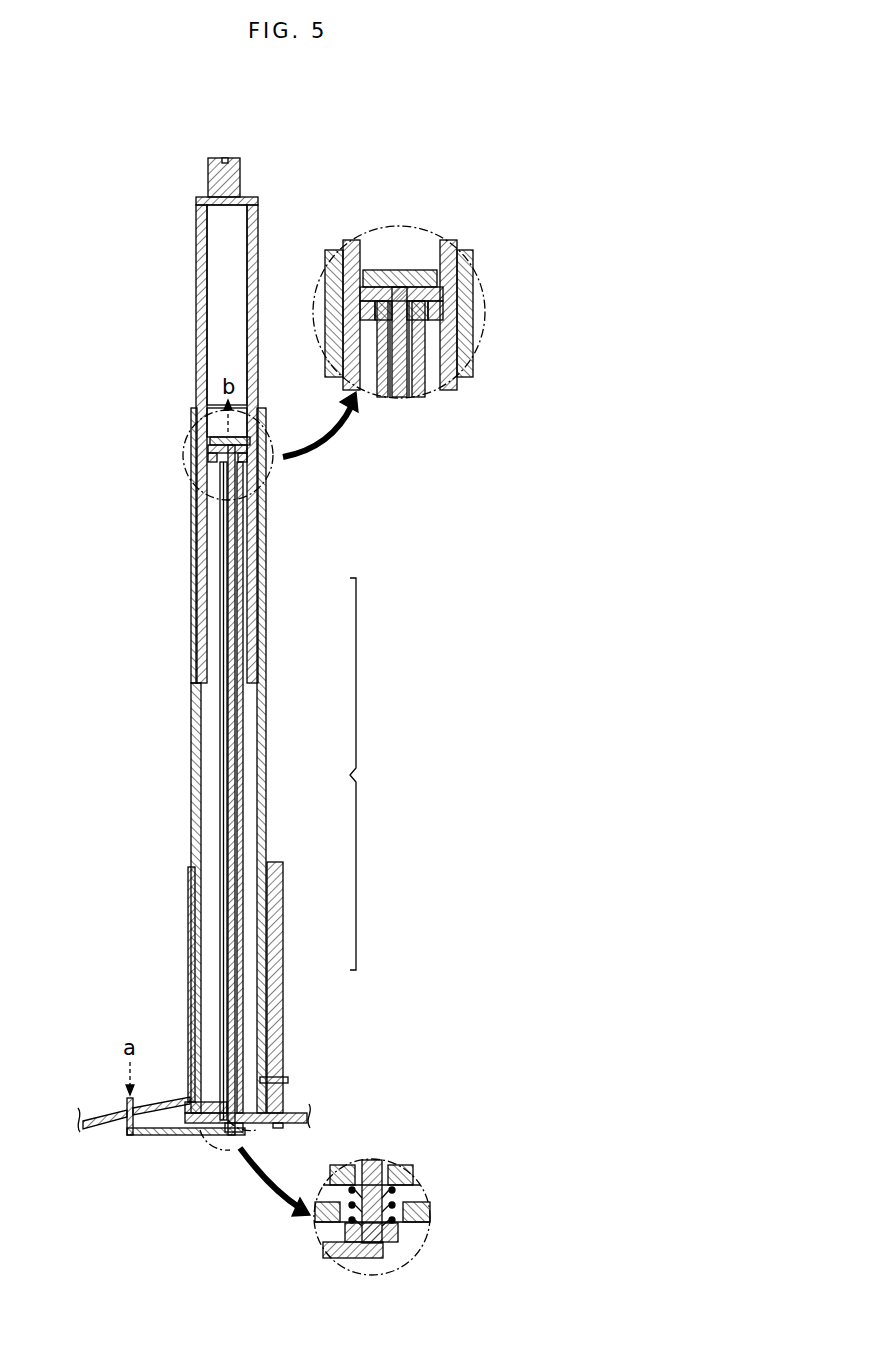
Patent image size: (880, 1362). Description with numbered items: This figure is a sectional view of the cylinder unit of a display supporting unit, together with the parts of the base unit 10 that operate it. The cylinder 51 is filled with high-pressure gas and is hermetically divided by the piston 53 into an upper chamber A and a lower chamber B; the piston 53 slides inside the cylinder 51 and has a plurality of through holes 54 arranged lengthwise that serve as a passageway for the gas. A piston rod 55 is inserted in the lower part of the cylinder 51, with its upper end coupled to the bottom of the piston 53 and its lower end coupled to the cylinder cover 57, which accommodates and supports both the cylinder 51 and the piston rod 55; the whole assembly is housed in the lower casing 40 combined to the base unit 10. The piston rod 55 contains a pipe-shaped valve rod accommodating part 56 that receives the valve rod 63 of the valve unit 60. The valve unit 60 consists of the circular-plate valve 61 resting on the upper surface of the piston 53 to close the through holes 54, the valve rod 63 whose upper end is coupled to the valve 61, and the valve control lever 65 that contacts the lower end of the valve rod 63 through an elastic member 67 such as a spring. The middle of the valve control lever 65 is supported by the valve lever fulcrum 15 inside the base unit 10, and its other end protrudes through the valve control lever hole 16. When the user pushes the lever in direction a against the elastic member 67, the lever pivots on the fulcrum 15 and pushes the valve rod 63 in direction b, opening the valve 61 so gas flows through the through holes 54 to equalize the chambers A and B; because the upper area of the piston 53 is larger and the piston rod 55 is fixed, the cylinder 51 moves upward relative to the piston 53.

The base unit 10 is at (103, 1120).
The valve lever fulcrum 15 is at (195, 1135).
The valve control lever hole 16 is at (128, 1122).
The lower casing 40 is at (192, 928).
The cylinder 51 is at (197, 318).
The piston 53 is at (478, 298).
The through holes 54 is at (470, 306).
The piston rod 55 is at (222, 806).
The valve rod accommodating part 56 is at (416, 396).
The cylinder cover 57 is at (192, 562).
The valve unit 60 is at (392, 789).
The valve 61 is at (396, 272).
The valve rod 63 is at (240, 758).
The valve control lever 65 is at (165, 1126).
The elastic member 67 is at (400, 1226).
The A chamber A is at (215, 246).
The B chamber B is at (213, 646).